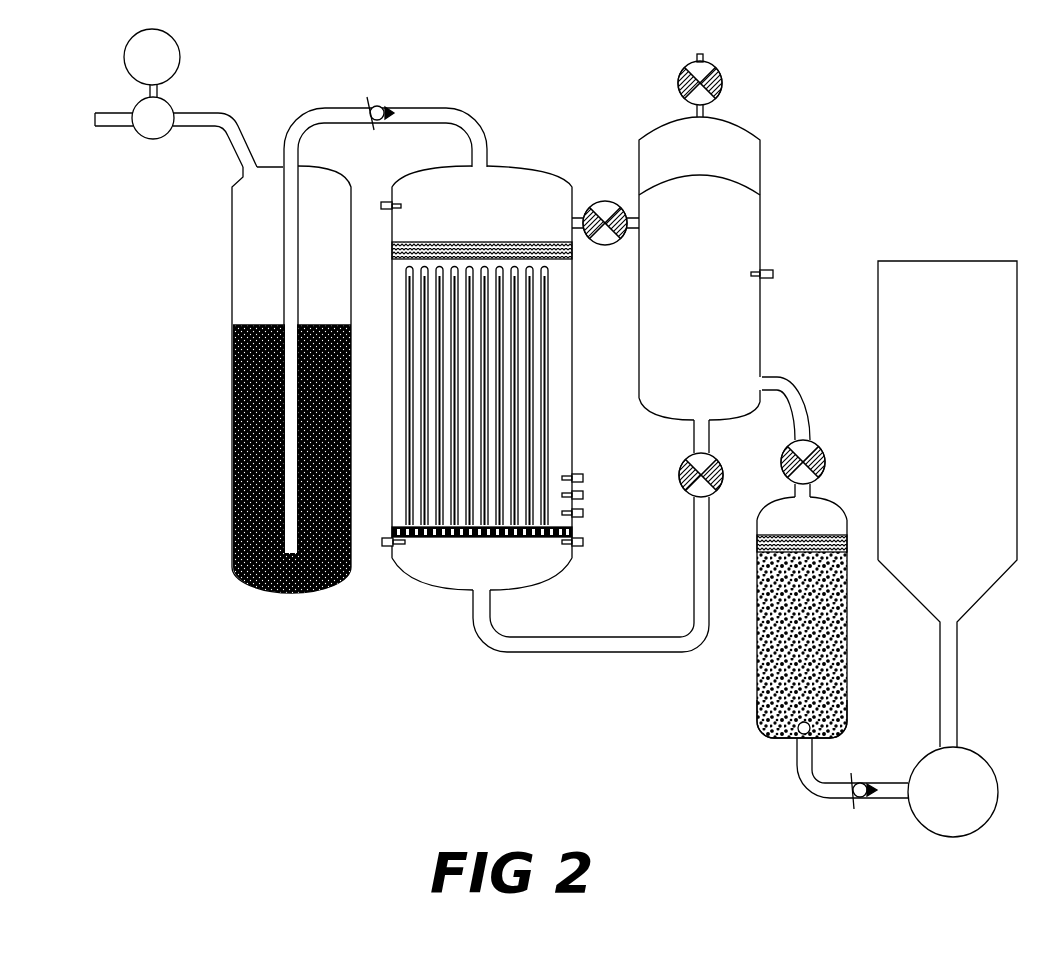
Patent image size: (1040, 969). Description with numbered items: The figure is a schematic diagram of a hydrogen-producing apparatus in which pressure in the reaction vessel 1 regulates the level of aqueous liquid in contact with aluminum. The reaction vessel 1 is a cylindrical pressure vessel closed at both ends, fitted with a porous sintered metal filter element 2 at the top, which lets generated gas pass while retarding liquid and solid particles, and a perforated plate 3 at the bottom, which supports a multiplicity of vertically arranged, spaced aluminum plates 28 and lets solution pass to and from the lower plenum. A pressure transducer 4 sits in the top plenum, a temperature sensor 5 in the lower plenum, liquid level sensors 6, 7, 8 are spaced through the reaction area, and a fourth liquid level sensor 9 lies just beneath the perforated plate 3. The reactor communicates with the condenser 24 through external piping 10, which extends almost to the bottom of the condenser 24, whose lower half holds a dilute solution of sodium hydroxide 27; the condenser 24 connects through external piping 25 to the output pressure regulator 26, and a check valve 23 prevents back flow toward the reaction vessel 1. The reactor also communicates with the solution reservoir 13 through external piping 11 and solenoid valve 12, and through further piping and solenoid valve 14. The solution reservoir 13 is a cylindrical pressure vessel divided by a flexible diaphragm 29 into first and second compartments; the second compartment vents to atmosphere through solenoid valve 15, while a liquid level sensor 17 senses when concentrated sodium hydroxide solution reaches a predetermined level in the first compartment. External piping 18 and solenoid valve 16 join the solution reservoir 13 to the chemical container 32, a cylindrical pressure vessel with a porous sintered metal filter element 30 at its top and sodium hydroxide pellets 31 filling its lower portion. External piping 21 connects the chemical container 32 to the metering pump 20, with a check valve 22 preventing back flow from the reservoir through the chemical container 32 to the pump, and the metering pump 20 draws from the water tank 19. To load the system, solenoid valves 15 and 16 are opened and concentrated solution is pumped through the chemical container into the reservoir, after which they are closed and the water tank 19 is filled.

The reaction vessel 1 is at (523, 167).
The porous sintered metal filter element 2 is at (520, 240).
The perforated plate 3 is at (467, 537).
The pressure transducer 4 is at (382, 203).
The temperature sensor 5 is at (383, 544).
The liquid level sensor 6 is at (583, 478).
The liquid level sensor 7 is at (583, 495).
The liquid level sensor 8 is at (583, 513).
The fourth liquid level sensor 9 is at (583, 542).
The external piping 10 is at (445, 107).
The external piping 11 is at (542, 653).
The solenoid valve 12 is at (722, 463).
The solution reservoir 13 is at (743, 127).
The solenoid valve 14 is at (607, 200).
The solenoid valve 15 is at (720, 72).
The solenoid valve 16 is at (813, 440).
The liquid level sensor 17 is at (773, 270).
The external piping 18 is at (780, 387).
The water tank 19 is at (940, 428).
The metering pump 20 is at (938, 810).
The external piping 21 is at (803, 787).
The check valve 22 is at (868, 773).
The check valve 23 is at (382, 102).
The condenser 24 is at (232, 250).
The external piping 25 is at (237, 117).
The output pressure regulator 26 is at (168, 100).
The dilute solution of sodium hydroxide 27 is at (232, 442).
The aluminum plates 28 is at (550, 363).
The flexible diaphragm 29 is at (733, 175).
The porous sintered metal filter element 30 is at (820, 525).
The sodium hydroxide pellets 31 is at (843, 660).
The chemical container 32 is at (757, 703).